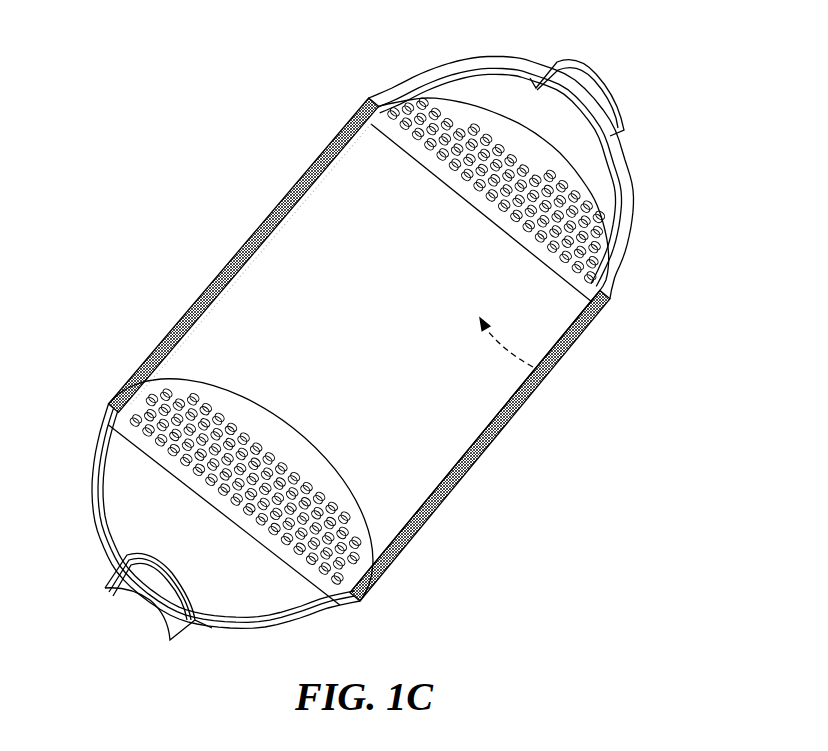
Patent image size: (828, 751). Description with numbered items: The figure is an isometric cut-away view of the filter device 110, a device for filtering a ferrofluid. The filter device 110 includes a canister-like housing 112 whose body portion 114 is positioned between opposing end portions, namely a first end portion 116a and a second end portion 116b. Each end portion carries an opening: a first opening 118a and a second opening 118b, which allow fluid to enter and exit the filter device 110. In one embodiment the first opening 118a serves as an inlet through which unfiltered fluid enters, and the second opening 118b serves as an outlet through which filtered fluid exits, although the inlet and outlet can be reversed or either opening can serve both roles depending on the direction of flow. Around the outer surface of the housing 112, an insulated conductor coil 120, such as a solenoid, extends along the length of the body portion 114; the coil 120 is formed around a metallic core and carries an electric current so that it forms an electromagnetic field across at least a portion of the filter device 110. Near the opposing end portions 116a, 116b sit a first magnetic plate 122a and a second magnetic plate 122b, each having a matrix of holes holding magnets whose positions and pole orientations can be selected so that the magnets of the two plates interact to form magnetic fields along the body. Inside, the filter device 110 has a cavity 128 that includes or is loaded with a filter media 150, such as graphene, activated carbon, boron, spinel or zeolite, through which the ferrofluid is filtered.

The filter device 110 is at (268, 141).
The housing 112 is at (110, 430).
The body portion 114 is at (472, 413).
The first end portion 116a is at (450, 67).
The second end portion 116b is at (288, 616).
The first opening 118a is at (598, 80).
The second opening 118b is at (155, 603).
The insulated conductor coil 120 is at (432, 507).
The first magnetic plate 122a is at (593, 260).
The second magnetic plate 122b is at (145, 363).
The cavity 128 is at (276, 292).
The filter media 150 is at (553, 388).